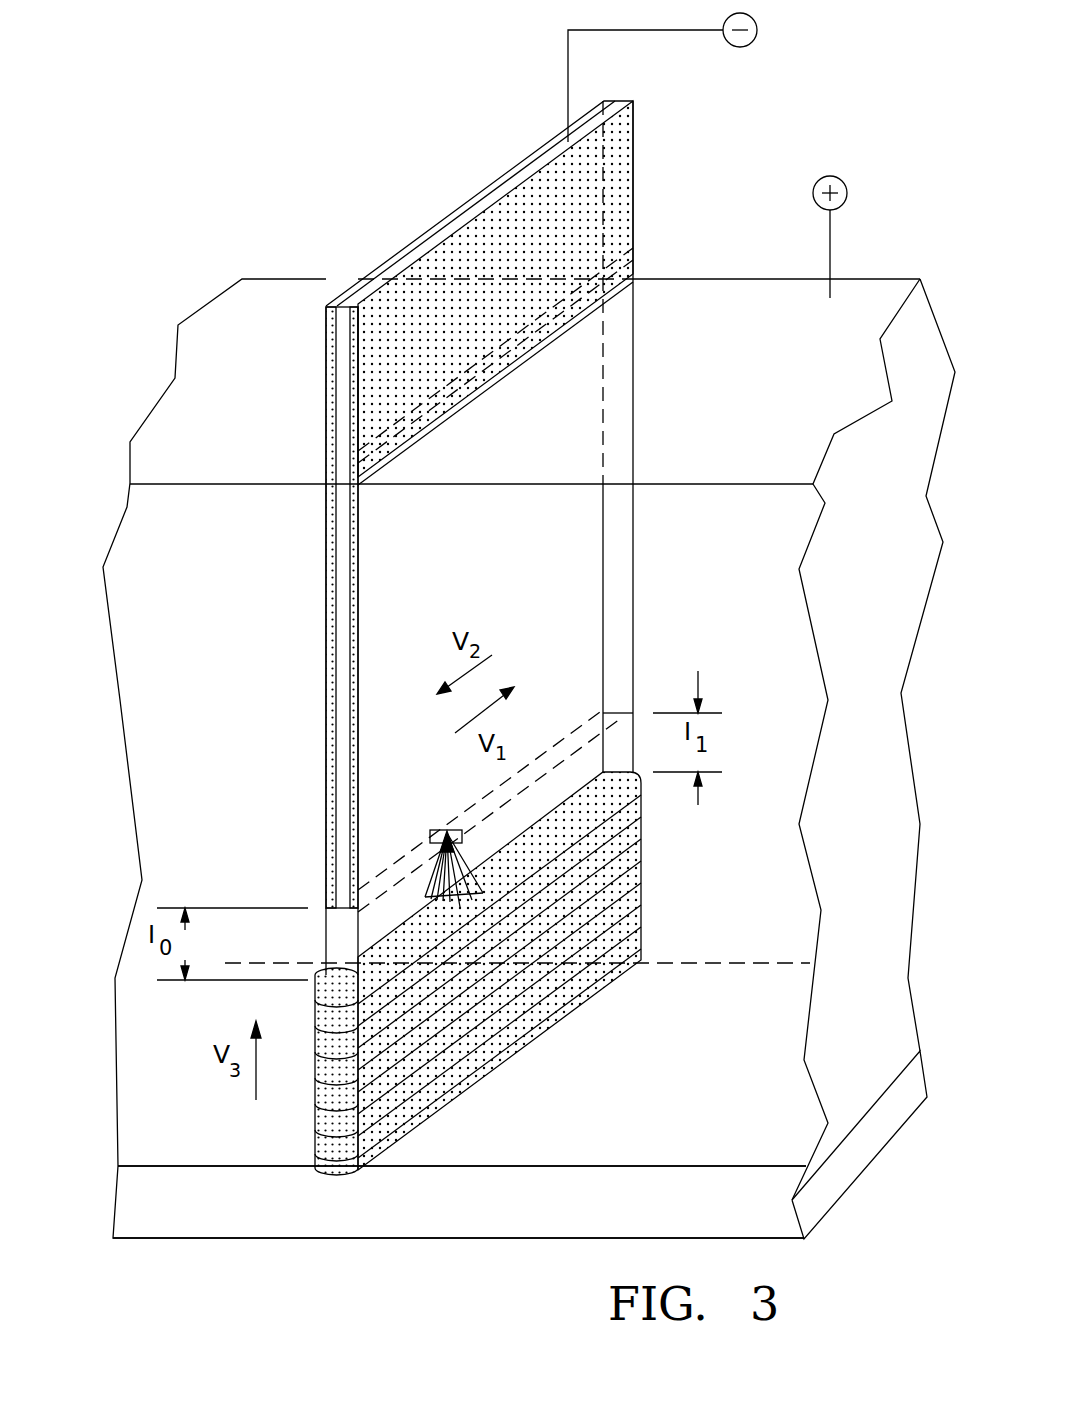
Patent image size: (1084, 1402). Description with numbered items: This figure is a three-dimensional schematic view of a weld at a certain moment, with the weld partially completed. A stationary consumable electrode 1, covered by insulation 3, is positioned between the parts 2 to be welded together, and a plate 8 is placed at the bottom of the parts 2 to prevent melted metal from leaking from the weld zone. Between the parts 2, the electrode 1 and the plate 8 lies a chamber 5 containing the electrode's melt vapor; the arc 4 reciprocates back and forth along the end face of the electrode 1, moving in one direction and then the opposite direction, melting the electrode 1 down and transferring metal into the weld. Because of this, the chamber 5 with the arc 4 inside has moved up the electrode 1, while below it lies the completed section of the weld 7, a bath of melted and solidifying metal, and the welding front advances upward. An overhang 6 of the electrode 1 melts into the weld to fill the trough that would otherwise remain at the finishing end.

The consumable electrode 1 is at (342, 347).
The parts to be welded 2 is at (223, 347).
The insulation 3 is at (383, 393).
The arc 4 is at (430, 885).
The chamber 5 is at (387, 902).
The overhang of the electrode 6 is at (635, 190).
The completed section of the weld 7 is at (468, 985).
The plate 8 is at (460, 1222).